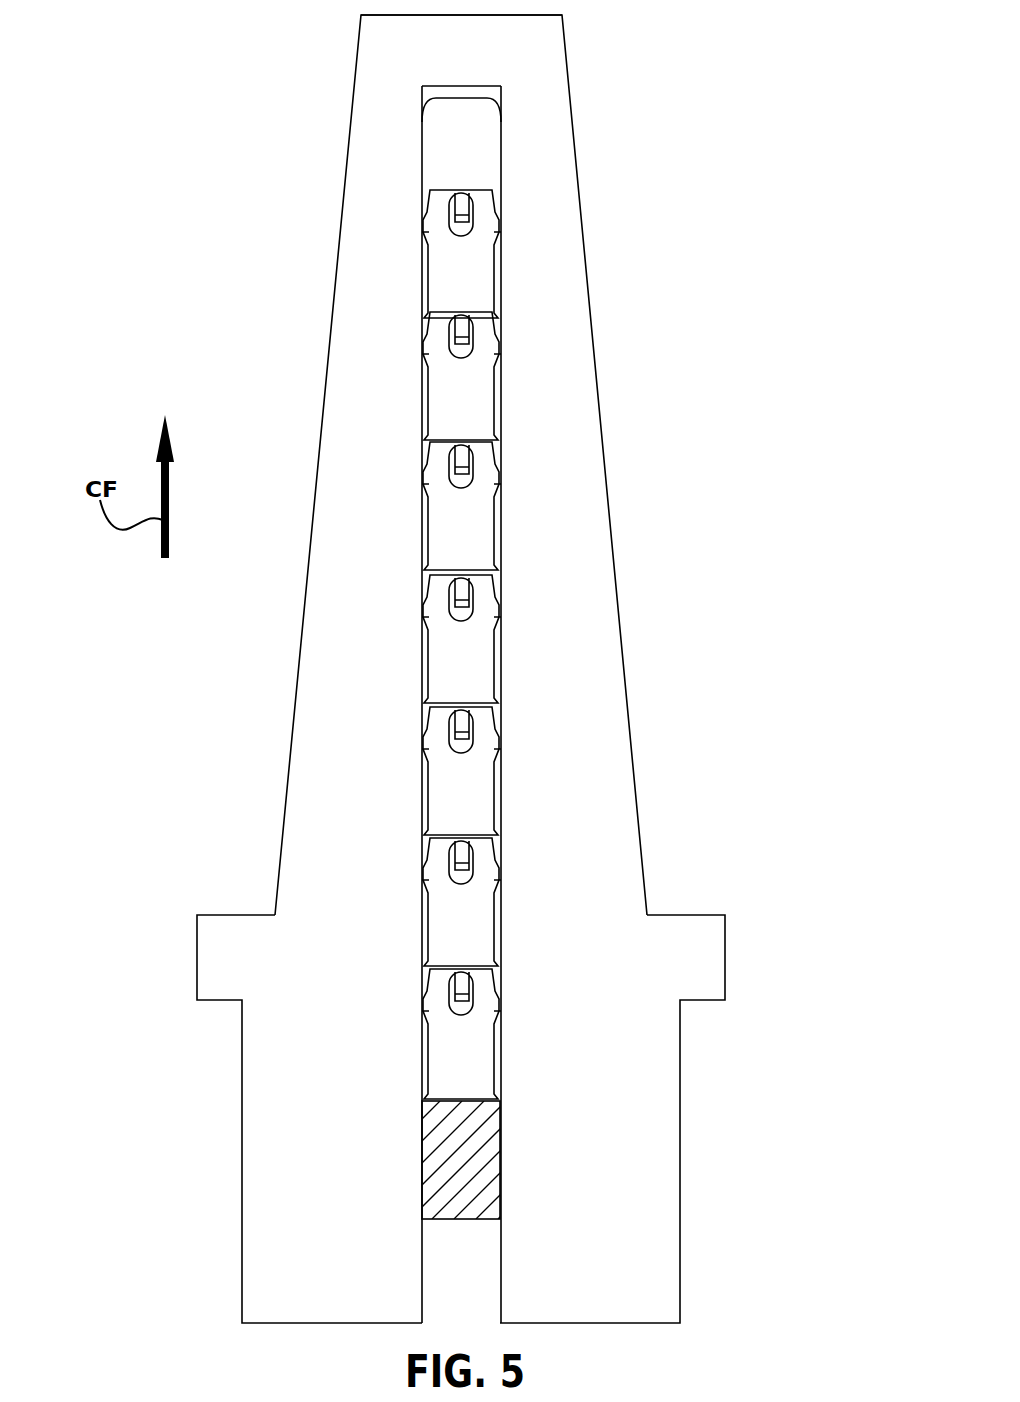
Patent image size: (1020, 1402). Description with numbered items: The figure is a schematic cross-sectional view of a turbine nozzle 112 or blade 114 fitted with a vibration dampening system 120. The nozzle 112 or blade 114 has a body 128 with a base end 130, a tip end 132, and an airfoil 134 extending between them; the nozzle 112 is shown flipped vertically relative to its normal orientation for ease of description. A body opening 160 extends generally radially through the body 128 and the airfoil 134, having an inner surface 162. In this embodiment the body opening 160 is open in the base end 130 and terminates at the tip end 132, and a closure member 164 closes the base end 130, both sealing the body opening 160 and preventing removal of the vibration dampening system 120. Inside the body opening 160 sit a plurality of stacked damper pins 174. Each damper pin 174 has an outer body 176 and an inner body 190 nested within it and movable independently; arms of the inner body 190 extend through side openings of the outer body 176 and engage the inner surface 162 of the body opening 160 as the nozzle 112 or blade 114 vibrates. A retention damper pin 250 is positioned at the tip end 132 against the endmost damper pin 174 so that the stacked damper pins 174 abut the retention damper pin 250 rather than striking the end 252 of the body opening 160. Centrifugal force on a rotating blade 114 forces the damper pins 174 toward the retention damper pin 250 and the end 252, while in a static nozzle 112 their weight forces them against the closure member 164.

The nozzle 112 is at (494, 465).
The blade 114 is at (596, 354).
The vibration dampening system 120 is at (420, 478).
The body 128 is at (572, 508).
The base end 130 is at (685, 1218).
The tip end 132 is at (583, 37).
The airfoil 134 is at (590, 557).
The body opening 160 is at (500, 1058).
The inner surface 162 is at (447, 962).
The closure member 164 is at (475, 1133).
The damper pin 174 is at (433, 413).
The outer body 176 is at (487, 683).
The inner body 190 is at (462, 735).
The retention damper pin 250 is at (442, 124).
The end 252 is at (487, 88).